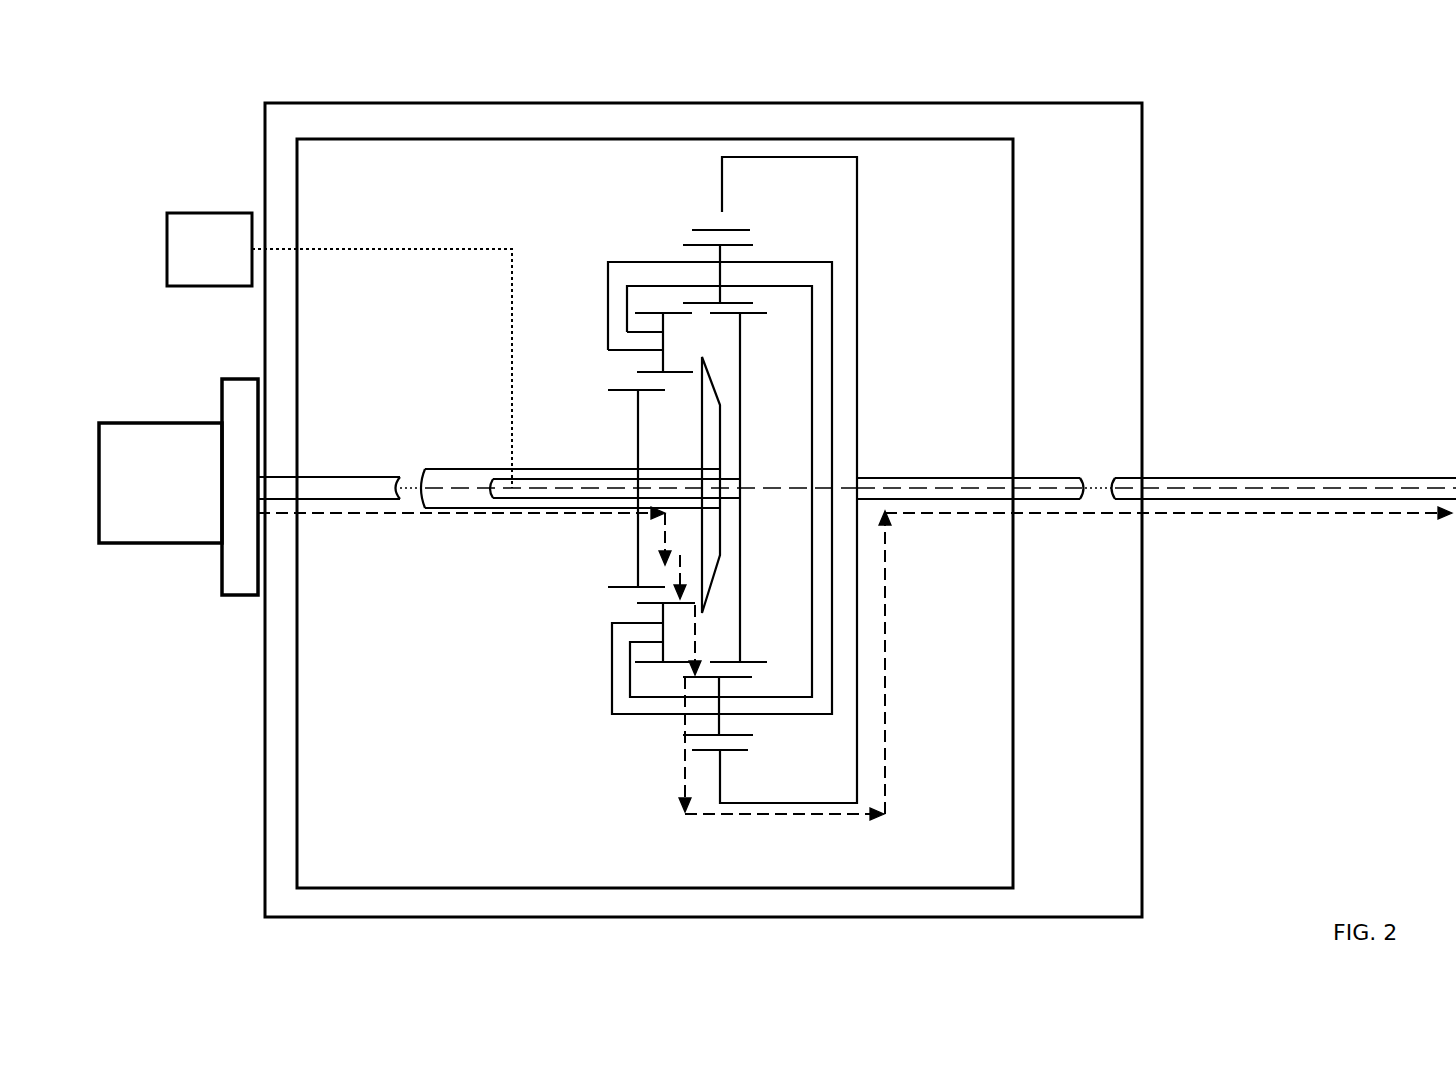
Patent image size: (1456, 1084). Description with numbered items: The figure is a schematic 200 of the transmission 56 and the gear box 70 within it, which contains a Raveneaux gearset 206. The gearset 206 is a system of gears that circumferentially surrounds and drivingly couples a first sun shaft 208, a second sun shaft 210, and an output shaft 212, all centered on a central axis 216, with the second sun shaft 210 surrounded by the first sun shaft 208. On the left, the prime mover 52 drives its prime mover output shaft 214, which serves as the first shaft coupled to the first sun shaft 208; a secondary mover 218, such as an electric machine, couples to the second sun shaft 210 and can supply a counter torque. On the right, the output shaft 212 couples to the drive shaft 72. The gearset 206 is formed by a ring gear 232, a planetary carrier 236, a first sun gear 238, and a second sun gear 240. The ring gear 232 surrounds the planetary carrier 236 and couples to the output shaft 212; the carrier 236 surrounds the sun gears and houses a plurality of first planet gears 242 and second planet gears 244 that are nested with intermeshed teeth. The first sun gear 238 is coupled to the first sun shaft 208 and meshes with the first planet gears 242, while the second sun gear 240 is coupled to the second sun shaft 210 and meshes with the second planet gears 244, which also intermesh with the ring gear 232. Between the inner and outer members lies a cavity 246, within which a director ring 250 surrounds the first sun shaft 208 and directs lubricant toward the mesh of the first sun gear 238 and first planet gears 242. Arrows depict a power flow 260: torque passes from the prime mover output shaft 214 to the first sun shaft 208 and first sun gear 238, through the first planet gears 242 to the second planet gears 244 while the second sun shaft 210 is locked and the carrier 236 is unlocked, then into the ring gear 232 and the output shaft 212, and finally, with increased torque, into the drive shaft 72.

The schematic 200 is at (1283, 80).
The transmission 56 is at (284, 103).
The gear box 70 is at (922, 138).
The secondary mover 218 is at (203, 213).
The prime mover 52 is at (162, 423).
The prime mover output shaft 214 is at (318, 475).
The first sun shaft 208 is at (488, 468).
The second sun shaft 210 is at (537, 483).
The central axis 216 is at (480, 488).
The output shaft 212 is at (868, 478).
The drive shaft 72 is at (1268, 478).
The ring gear 232 is at (718, 212).
The second planet gears 244 is at (692, 240).
The first planet gears 242 is at (677, 313).
The planetary carrier 236 is at (832, 300).
The first sun gear 238 is at (613, 388).
The second sun gear 240 is at (740, 373).
The cavity 246 is at (724, 351).
The director ring 250 is at (702, 447).
The Raveneaux gearset 206 is at (888, 208).
The power flow 260 is at (550, 513).